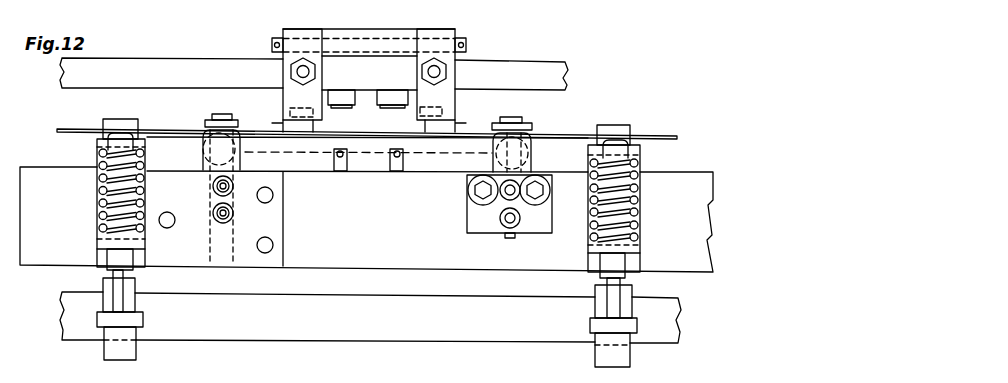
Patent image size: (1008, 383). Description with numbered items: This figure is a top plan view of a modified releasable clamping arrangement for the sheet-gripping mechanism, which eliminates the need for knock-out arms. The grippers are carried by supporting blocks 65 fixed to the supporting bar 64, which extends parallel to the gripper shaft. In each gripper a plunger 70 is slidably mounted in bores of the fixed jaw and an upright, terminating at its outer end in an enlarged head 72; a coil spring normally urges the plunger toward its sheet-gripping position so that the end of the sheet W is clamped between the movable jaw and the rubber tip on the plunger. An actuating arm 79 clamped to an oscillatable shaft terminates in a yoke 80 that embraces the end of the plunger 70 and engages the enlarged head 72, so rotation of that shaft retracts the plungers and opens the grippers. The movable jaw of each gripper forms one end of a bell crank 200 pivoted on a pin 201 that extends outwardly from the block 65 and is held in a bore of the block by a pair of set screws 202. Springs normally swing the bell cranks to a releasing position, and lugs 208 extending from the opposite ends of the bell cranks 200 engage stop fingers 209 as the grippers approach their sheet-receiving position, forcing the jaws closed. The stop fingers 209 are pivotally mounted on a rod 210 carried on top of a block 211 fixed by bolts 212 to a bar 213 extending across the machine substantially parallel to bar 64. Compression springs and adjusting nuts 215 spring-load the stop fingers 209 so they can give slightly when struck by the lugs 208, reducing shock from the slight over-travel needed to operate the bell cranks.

The supporting bar 64 is at (57, 257).
The supporting block 65 is at (270, 223).
The plunger 70 is at (107, 218).
The enlarged head 72 is at (143, 318).
The actuating arm 79 is at (128, 352).
The yoke 80 is at (107, 304).
The bell crank 200 is at (190, 112).
The pin 201 is at (227, 115).
The set screws 202 is at (214, 212).
The lug 208 is at (317, 113).
The stop finger 209 is at (313, 91).
The rod 210 is at (272, 46).
The block 211 is at (403, 14).
The bolts 212 is at (357, 105).
The bar 213 is at (85, 75).
The adjusting nuts 215 is at (291, 71).
The sheet W is at (668, 139).